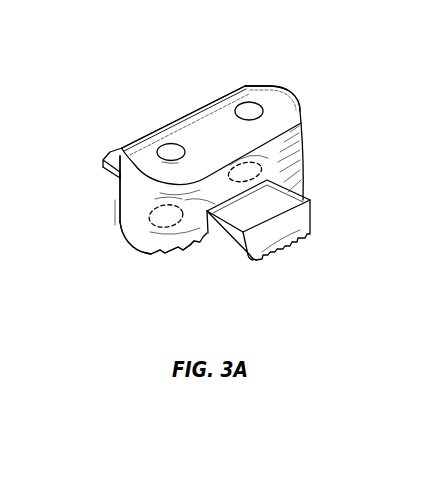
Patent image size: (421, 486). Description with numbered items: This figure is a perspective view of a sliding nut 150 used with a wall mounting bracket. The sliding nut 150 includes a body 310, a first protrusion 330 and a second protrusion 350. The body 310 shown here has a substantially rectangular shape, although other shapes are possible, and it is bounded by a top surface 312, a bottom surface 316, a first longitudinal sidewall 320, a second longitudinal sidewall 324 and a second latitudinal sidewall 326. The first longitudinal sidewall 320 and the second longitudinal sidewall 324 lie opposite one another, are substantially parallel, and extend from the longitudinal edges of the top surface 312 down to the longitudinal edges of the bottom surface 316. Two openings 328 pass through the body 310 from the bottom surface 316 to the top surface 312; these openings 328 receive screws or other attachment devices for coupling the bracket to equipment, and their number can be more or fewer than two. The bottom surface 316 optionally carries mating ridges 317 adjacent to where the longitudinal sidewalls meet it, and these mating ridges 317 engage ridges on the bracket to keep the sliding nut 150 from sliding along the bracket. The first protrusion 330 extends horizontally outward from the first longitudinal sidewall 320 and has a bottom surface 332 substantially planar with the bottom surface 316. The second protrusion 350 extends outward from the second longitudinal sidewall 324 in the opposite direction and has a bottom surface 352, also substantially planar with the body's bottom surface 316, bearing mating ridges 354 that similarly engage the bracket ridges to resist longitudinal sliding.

The sliding nut 150 is at (146, 64).
The body 310 is at (217, 113).
The top surface 312 is at (281, 110).
The bottom surface 316 is at (148, 254).
The mating ridges 317 is at (188, 257).
The first longitudinal sidewall 320 is at (187, 113).
The second longitudinal sidewall 324 is at (280, 152).
The second latitudinal sidewall 326 is at (137, 223).
The openings 328 is at (248, 105).
The first protrusion 330 is at (105, 154).
The bottom surface 332 is at (109, 172).
The second protrusion 350 is at (288, 204).
The bottom surface 352 is at (243, 252).
The mating ridges 354 is at (291, 243).